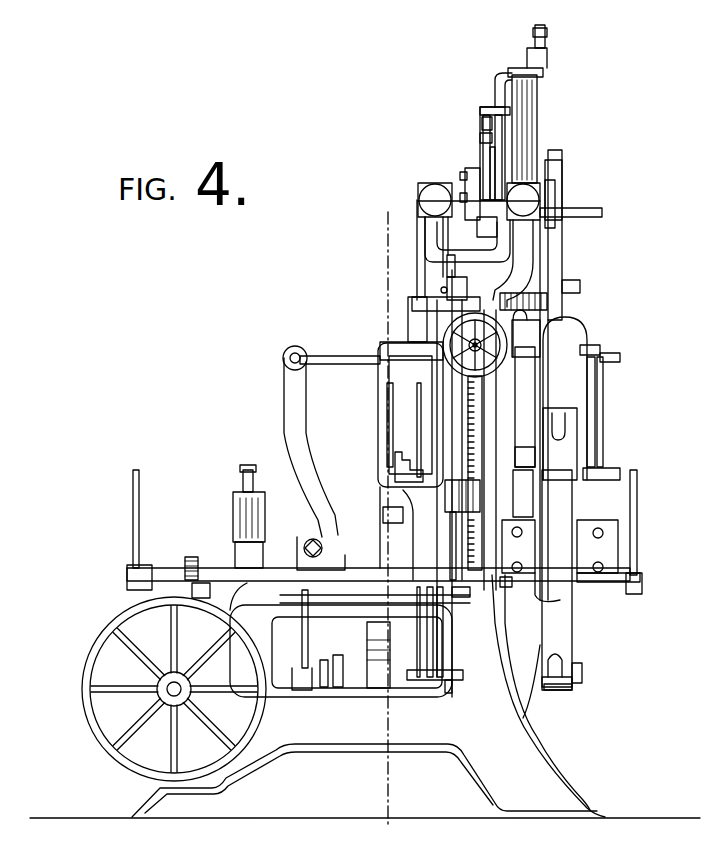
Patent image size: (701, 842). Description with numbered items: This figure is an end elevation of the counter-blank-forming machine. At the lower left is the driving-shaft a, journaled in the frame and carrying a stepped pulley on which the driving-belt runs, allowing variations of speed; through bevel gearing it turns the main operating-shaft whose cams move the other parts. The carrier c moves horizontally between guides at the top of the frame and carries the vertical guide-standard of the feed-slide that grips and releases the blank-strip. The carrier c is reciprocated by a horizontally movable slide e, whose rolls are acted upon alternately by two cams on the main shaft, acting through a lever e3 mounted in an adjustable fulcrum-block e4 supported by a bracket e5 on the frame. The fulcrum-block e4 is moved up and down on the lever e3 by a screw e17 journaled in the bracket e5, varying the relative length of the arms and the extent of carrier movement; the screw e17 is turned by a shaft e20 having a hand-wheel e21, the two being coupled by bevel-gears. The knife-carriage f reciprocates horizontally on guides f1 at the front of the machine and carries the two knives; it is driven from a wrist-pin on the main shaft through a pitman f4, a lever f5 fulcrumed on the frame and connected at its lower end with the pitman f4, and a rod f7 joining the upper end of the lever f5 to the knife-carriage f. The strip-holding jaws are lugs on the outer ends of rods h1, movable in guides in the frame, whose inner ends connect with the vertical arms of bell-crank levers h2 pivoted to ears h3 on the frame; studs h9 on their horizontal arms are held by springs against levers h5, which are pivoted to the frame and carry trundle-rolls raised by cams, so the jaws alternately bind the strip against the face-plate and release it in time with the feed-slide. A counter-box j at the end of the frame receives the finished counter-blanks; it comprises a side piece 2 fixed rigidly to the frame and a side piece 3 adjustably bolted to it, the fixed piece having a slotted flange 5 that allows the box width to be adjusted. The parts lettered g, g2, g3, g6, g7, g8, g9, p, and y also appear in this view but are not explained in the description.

The driving-shaft a is at (172, 688).
The carrier c is at (420, 307).
The slide e is at (440, 685).
The lever e3 is at (442, 613).
The adjustable fulcrum-block e4 is at (470, 510).
The bracket e5 is at (503, 587).
The screw e17 is at (463, 397).
The shaft e20 is at (411, 366).
The hand-wheel e21 is at (447, 327).
The knife-carriage f is at (580, 350).
The guides f1 is at (557, 305).
The pitman f4 is at (558, 690).
The lever f5 is at (560, 622).
The rod f7 is at (560, 412).
The standard g is at (557, 277).
The bracket g2 is at (545, 247).
The arm g3 is at (557, 236).
The collar g6 is at (480, 138).
The yoke g7 is at (487, 233).
The rod g8 is at (488, 168).
The hook g9 is at (490, 105).
The rods h1 is at (336, 357).
The bell-crank levers h2 is at (290, 407).
The ears h3 is at (325, 536).
The levers h5 is at (232, 605).
The studs h9 is at (213, 573).
The counter-box j is at (397, 428).
The cylinder p is at (523, 98).
The catch y is at (415, 455).
The side piece 2 is at (392, 400).
The side piece 3 is at (417, 427).
The flange 5 is at (391, 515).